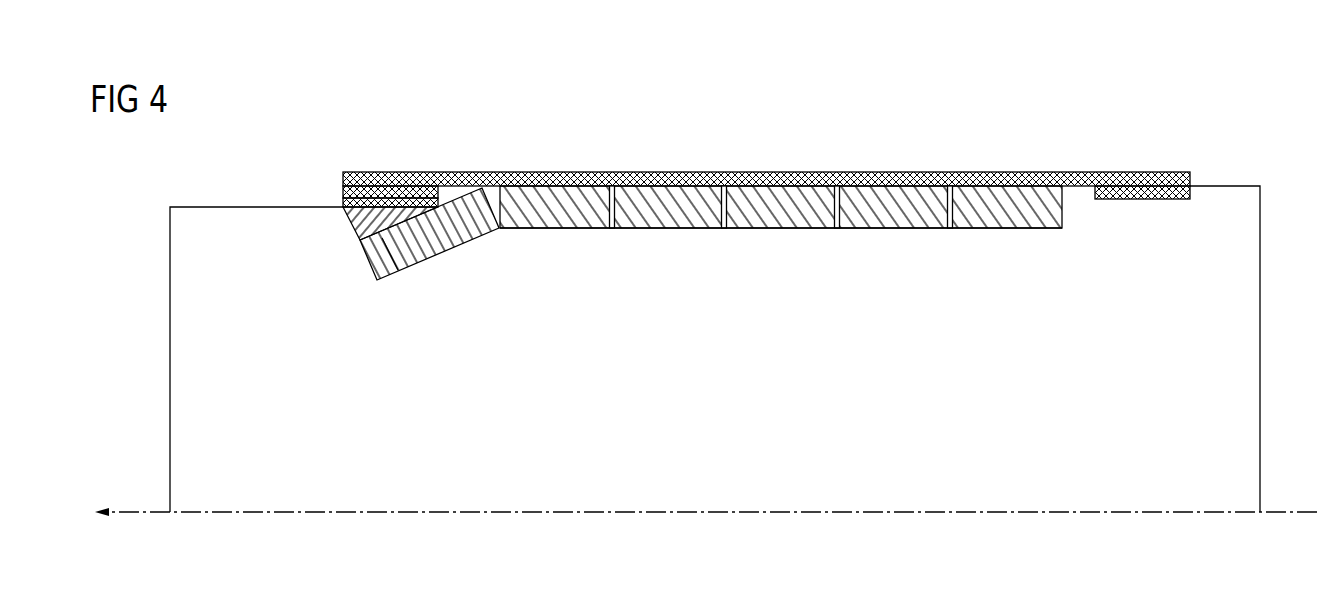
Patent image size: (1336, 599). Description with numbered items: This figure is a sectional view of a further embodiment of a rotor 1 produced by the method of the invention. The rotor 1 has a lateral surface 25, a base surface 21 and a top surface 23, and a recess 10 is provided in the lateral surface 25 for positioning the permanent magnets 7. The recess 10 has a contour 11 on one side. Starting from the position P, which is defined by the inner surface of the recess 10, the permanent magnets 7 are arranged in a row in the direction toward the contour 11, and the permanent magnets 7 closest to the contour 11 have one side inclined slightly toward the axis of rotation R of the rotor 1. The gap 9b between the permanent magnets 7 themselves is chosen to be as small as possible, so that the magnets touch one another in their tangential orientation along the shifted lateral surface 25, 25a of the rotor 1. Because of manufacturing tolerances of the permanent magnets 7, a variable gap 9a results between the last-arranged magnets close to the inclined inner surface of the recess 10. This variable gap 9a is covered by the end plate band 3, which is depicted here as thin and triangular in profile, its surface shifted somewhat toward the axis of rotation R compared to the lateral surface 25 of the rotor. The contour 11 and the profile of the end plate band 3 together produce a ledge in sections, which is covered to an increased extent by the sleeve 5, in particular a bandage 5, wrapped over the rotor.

The rotor 1 is at (752, 124).
The end plate band 3 is at (350, 228).
The sleeve (bandage) 5 is at (341, 172).
The permanent magnets 7 is at (550, 229).
The variable gap 9a is at (370, 262).
The gap 9b is at (737, 229).
The recess 10 is at (690, 232).
The contour 11 is at (420, 266).
The base surface 21 is at (166, 267).
The top surface 23 is at (1263, 258).
The lateral surface 25 is at (232, 205).
The shifted lateral surface 25a is at (783, 230).
The position P is at (1065, 171).
The axis of rotation R is at (706, 499).